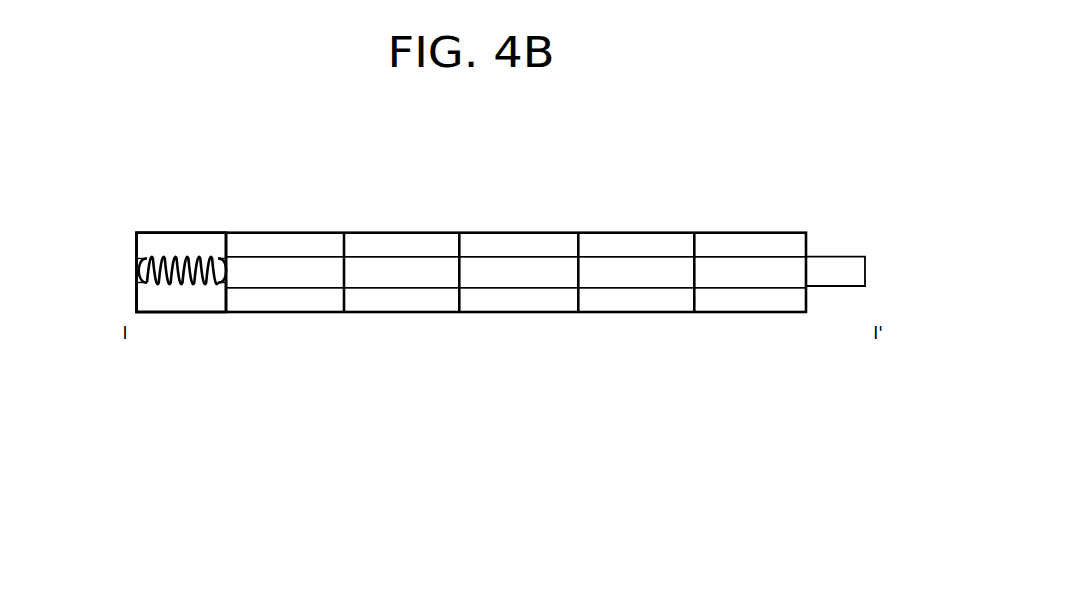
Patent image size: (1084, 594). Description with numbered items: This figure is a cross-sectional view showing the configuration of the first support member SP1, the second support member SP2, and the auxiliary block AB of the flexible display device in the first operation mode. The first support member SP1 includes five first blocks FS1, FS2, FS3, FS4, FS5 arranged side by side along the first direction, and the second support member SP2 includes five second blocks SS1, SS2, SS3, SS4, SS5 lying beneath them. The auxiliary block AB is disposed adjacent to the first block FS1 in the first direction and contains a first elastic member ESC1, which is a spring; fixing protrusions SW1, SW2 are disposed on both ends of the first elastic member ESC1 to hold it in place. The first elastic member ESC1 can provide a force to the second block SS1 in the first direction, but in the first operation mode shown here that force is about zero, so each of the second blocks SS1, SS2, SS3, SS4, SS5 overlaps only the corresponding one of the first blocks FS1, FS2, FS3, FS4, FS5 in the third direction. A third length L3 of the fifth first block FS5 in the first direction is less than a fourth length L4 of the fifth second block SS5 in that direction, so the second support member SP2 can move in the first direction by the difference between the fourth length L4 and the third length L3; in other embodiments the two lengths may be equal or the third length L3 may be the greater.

The auxiliary block AB is at (213, 232).
The first elastic member ESC1 is at (156, 257).
The fixing protrusion SW1 is at (142, 284).
The fixing protrusion SW2 is at (217, 284).
The first block FS1 is at (278, 242).
The first block FS2 is at (396, 242).
The first block FS3 is at (512, 242).
The first block FS4 is at (630, 242).
The first block FS5 is at (722, 242).
The second block SS1 is at (303, 278).
The second block SS2 is at (418, 278).
The second block SS3 is at (535, 278).
The second block SS4 is at (650, 278).
The second block SS5 is at (742, 278).
The first support member SP1 is at (747, 160).
The second support member SP2 is at (282, 382).
The third length L3 is at (694, 316).
The fourth length L4 is at (865, 290).